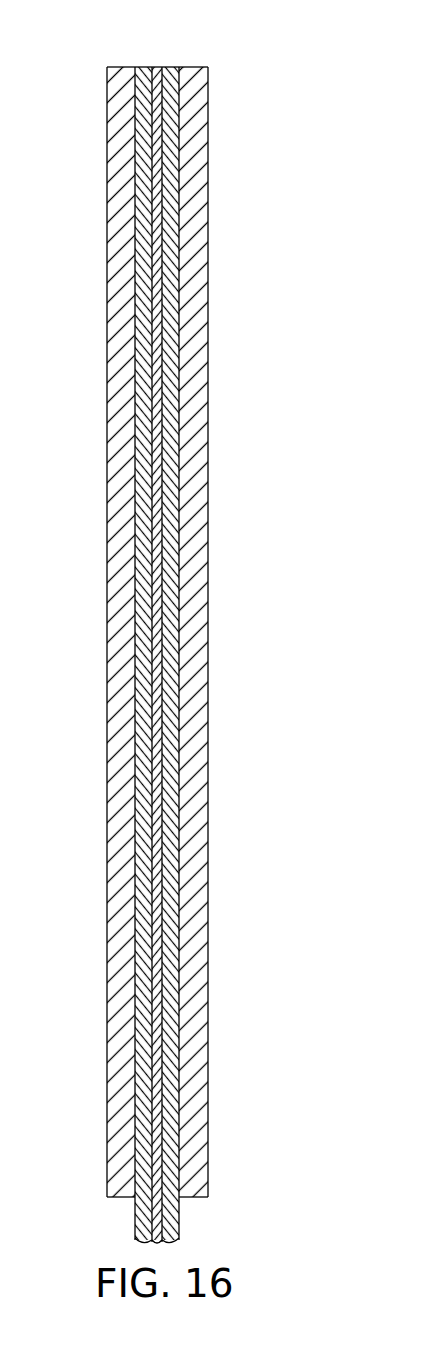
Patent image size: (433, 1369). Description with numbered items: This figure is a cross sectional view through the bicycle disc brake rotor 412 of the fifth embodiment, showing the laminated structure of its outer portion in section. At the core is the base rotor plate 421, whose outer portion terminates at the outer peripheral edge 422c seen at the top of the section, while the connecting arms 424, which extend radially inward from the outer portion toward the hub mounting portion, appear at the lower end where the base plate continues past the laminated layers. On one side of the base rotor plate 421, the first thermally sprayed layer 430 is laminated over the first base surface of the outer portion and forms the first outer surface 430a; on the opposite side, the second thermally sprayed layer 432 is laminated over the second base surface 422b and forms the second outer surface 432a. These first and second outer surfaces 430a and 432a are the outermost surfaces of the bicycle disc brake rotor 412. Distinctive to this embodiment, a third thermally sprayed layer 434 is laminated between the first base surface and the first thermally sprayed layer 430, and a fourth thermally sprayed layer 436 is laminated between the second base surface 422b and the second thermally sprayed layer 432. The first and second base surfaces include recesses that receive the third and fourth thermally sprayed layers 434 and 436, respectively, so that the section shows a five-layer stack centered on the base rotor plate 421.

The bicycle disc brake rotor 412 is at (57, 198).
The base rotor plate 421 is at (152, 65).
The second base surface 422b is at (181, 361).
The outer peripheral edge 422c is at (158, 66).
The connecting arms 424 is at (162, 1230).
The first thermally sprayed layer 430 is at (105, 311).
The first outer surface 430a is at (107, 492).
The second thermally sprayed layer 432 is at (210, 589).
The second outer surface 432a is at (208, 766).
The third thermally sprayed layer 434 is at (130, 1222).
The fourth thermally sprayed layer 436 is at (186, 1213).